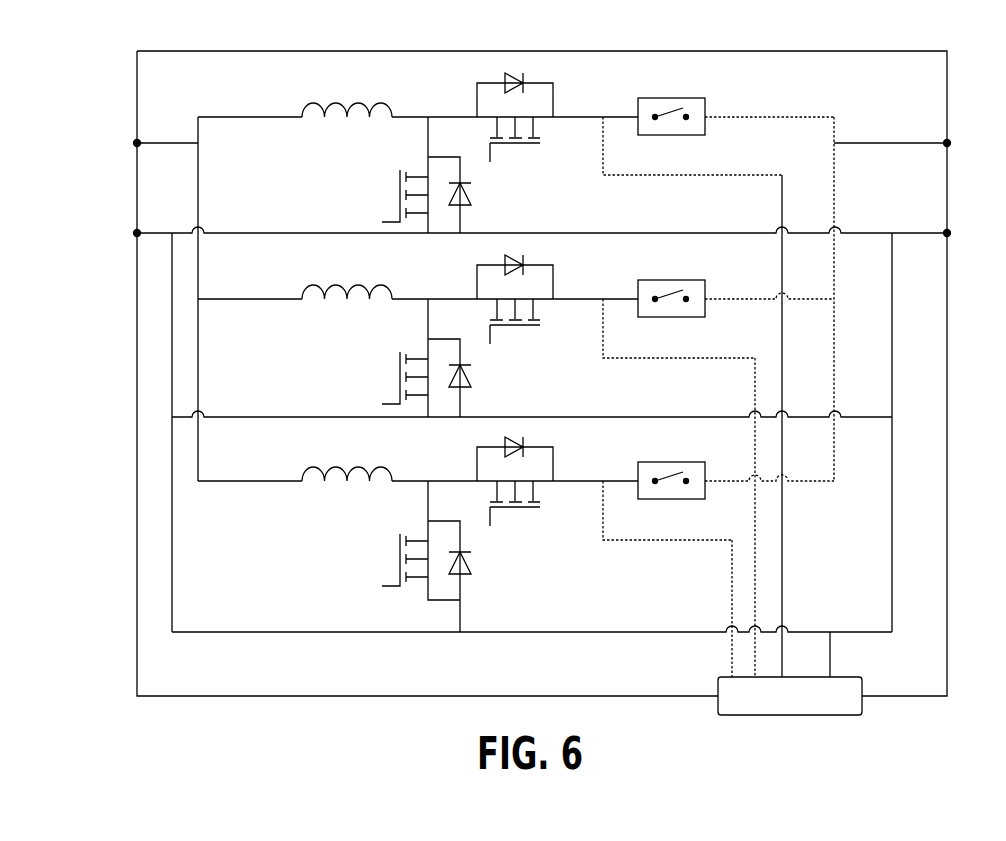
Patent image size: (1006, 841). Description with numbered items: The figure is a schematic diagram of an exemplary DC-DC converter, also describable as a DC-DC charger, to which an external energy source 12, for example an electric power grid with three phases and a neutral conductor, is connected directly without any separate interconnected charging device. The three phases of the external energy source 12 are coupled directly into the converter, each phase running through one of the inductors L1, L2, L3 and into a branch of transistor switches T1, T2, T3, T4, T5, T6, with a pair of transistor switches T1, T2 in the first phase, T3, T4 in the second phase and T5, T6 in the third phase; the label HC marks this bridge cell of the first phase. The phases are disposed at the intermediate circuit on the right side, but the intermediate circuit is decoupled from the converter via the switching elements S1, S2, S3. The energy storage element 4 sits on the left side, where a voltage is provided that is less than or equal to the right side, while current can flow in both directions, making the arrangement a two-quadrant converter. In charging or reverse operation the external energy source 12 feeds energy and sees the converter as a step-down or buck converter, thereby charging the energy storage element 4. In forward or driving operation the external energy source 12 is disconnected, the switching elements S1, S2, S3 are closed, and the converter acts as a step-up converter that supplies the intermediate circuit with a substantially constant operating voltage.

The energy storage element 4 is at (112, 163).
The external energy source 12 is at (862, 706).
The inductor L1 is at (347, 96).
The inductor L2 is at (347, 278).
The inductor L3 is at (347, 460).
The transistor switch T1 is at (528, 117).
The transistor switch T2 is at (413, 196).
The transistor switch T3 is at (515, 309).
The transistor switch T4 is at (413, 375).
The transistor switch T5 is at (515, 490).
The transistor switch T6 is at (413, 558).
The switching element S1 is at (671, 101).
The switching element S2 is at (671, 283).
The switching element S3 is at (671, 465).
The half-bridge converter cell HC is at (488, 175).